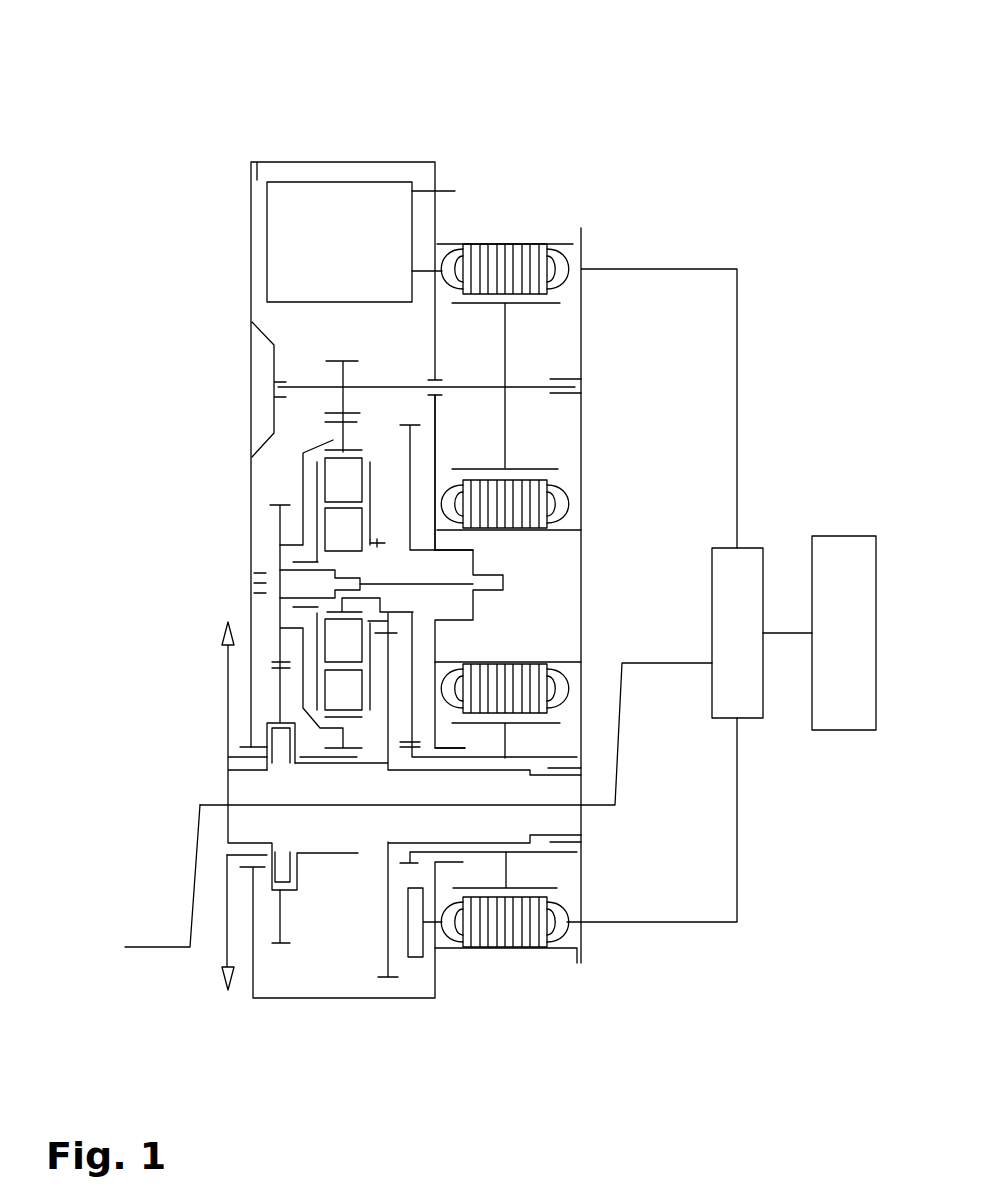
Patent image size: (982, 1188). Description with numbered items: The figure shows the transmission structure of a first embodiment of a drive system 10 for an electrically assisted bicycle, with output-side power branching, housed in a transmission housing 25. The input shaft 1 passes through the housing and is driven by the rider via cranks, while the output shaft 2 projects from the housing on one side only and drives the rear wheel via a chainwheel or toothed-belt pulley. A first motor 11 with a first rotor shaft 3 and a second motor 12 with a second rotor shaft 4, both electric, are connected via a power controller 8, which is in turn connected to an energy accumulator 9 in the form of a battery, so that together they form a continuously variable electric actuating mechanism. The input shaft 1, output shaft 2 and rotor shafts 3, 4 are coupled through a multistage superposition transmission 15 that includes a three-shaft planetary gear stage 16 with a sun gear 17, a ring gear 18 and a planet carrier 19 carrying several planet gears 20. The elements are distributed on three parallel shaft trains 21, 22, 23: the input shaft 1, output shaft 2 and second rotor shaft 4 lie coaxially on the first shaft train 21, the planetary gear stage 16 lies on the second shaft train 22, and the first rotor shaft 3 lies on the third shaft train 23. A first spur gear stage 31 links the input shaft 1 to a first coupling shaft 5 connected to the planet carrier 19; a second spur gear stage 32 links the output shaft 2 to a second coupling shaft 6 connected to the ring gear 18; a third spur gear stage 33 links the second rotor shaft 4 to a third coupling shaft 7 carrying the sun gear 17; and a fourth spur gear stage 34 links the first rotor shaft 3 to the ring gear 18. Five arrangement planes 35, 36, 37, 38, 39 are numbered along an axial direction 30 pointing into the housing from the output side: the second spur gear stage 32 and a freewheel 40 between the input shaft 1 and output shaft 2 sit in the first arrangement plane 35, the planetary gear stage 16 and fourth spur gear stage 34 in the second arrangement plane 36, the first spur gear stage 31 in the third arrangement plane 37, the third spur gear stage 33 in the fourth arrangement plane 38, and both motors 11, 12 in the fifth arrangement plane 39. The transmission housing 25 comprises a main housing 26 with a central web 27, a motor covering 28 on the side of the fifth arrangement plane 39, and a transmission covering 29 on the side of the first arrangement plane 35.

The input shaft 1 is at (218, 793).
The output shaft 2 is at (233, 758).
The first rotor shaft 3 is at (497, 386).
The second rotor shaft 4 is at (500, 758).
The first coupling shaft 5 is at (378, 544).
The second coupling shaft 6 is at (303, 594).
The third coupling shaft 7 is at (384, 613).
The power controller 8 is at (727, 647).
The energy accumulator 9 is at (832, 645).
The drive system 10 is at (163, 190).
The first motor 11 is at (530, 250).
The second motor 12 is at (530, 940).
The multistage superposition transmission 15 is at (199, 489).
The planetary gear stage 16 is at (327, 521).
The sun gear 17 is at (350, 568).
The ring gear 18 is at (341, 453).
The planet carrier 19 is at (372, 510).
The planet gears 20 is at (331, 490).
The first shaft train 21 is at (688, 803).
The second shaft train 22 is at (620, 588).
The third shaft train 23 is at (618, 392).
The transmission housing 25 is at (339, 1013).
The main housing 26 is at (288, 998).
The central web 27 is at (434, 364).
The motor covering 28 is at (583, 305).
The transmission covering 29 is at (250, 384).
The axial direction 30 is at (202, 59).
The first spur gear stage 31 is at (381, 918).
The second spur gear stage 32 is at (281, 940).
The third spur gear stage 33 is at (416, 449).
The fourth spur gear stage 34 is at (350, 373).
The first arrangement plane 35 is at (286, 138).
The second arrangement plane 36 is at (346, 138).
The third arrangement plane 37 is at (382, 138).
The fourth arrangement plane 38 is at (408, 138).
The fifth arrangement plane 39 is at (500, 138).
The freewheel 40 is at (278, 748).